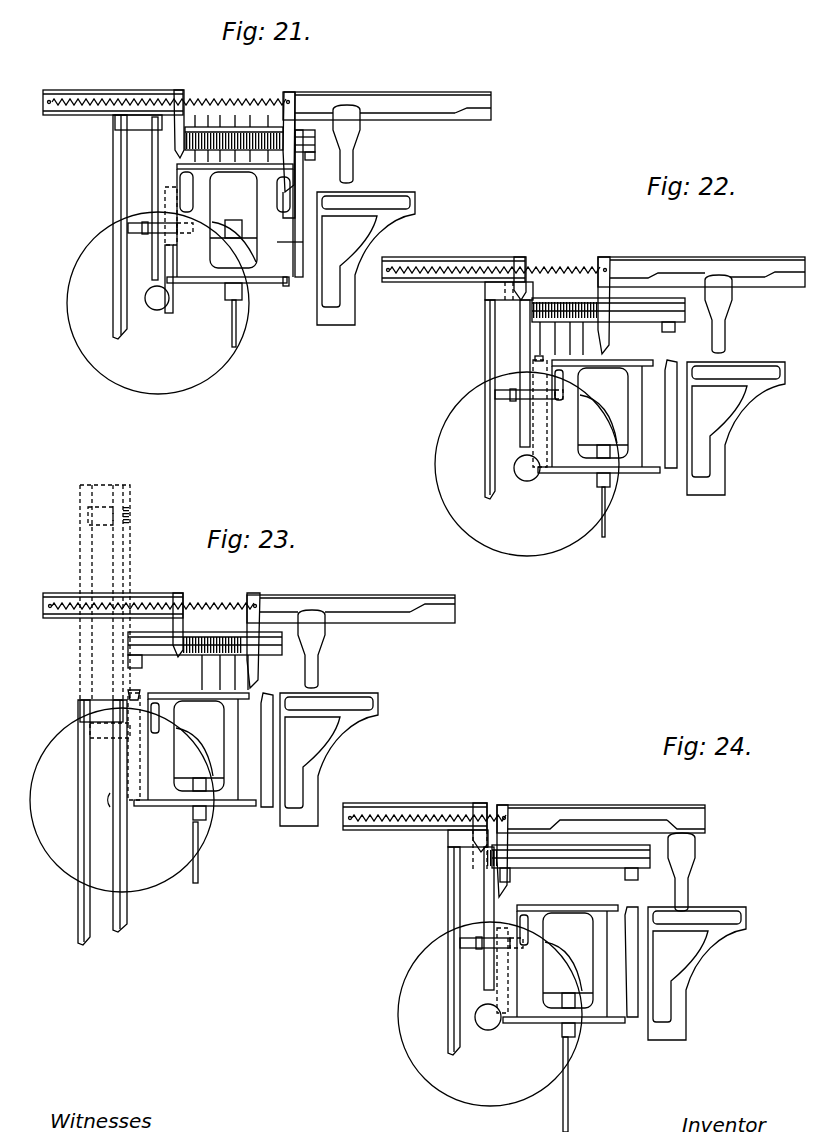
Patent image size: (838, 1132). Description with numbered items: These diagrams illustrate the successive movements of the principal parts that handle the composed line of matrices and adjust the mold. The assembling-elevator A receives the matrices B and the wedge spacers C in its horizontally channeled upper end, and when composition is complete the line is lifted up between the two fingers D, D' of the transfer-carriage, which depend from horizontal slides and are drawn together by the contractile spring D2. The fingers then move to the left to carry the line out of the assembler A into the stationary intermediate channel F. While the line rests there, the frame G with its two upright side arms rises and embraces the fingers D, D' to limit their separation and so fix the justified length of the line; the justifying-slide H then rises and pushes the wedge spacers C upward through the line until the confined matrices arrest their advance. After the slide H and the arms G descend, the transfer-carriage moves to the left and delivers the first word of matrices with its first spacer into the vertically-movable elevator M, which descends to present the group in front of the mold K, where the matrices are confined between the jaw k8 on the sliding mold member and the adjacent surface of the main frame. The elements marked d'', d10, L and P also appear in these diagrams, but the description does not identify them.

In FIG. 21, the contractile spring D2 is at (127, 100).
In FIG. 22, the contractile spring D2 is at (481, 268).
In FIG. 23, the contractile spring D2 is at (218, 603).
In FIG. 24, the contractile spring D2 is at (427, 815).
In FIG. 21, the finger D is at (169, 111).
In FIG. 22, the finger D is at (522, 267).
In FIG. 23, the finger D is at (186, 625).
In FIG. 24, the finger D is at (477, 814).
In FIG. 21, the finger D' is at (399, 141).
In FIG. 22, the finger D' is at (701, 296).
In FIG. 23, the finger D' is at (351, 640).
In FIG. 24, the finger D' is at (611, 839).
In FIG. 21, the shoulder of slide bar d'' is at (375, 87).
In FIG. 22, the shoulder of slide bar d'' is at (687, 255).
In FIG. 23, the shoulder of slide bar d'' is at (335, 592).
In FIG. 24, the shoulder of slide bar d'' is at (587, 800).
In FIG. 21, the notch of slide bar d10 is at (463, 107).
In FIG. 22, the notch of slide bar d10 is at (768, 273).
In FIG. 23, the notch of slide bar d10 is at (423, 607).
In FIG. 24, the notch of slide bar d10 is at (668, 821).
In FIG. 21, the wedge spacers C is at (268, 158).
In FIG. 22, the wedge spacers C is at (565, 332).
In FIG. 23, the wedge spacers C is at (208, 668).
In FIG. 21, the matrices B is at (249, 160).
In FIG. 22, the matrices B is at (542, 300).
In FIG. 23, the matrices B is at (187, 657).
In FIG. 21, the vertically-movable slide or elevator M is at (133, 125).
In FIG. 22, the vertically-movable slide or elevator M is at (493, 292).
In FIG. 23, the vertically-movable slide or elevator M is at (100, 708).
In FIG. 24, the vertically-movable slide or elevator M is at (458, 838).
In FIG. 21, the frame with upright side arms G is at (168, 175).
In FIG. 22, the frame with upright side arms G is at (543, 410).
In FIG. 23, the frame with upright side arms G is at (200, 748).
In FIG. 24, the frame with upright side arms G is at (561, 932).
In FIG. 21, the mold K is at (140, 223).
In FIG. 22, the mold K is at (502, 390).
In FIG. 24, the mold K is at (467, 940).
In FIG. 21, the front projecting jaw or abutment k8 is at (145, 236).
In FIG. 22, the front projecting jaw or abutment k8 is at (514, 389).
In FIG. 24, the front projecting jaw or abutment k8 is at (478, 937).
In FIG. 21, the wheel L is at (158, 303).
In FIG. 22, the wheel L is at (527, 464).
In FIG. 23, the wheel L is at (122, 800).
In FIG. 24, the wheel L is at (490, 1014).
In FIG. 21, the justifying-slide H is at (227, 173).
In FIG. 22, the justifying-slide H is at (637, 400).
In FIG. 23, the justifying-slide H is at (200, 724).
In FIG. 24, the justifying-slide H is at (598, 909).
In FIG. 21, the handle P is at (350, 153).
In FIG. 22, the handle P is at (731, 331).
In FIG. 23, the handle P is at (320, 656).
In FIG. 24, the handle P is at (692, 870).
In FIG. 21, the stationary channel or support F is at (313, 150).
In FIG. 22, the stationary channel or support F is at (645, 318).
In FIG. 23, the stationary channel or support F is at (143, 645).
In FIG. 24, the stationary channel or support F is at (562, 858).
In FIG. 21, the assembling-elevator A is at (413, 192).
In FIG. 22, the assembling-elevator A is at (720, 404).
In FIG. 23, the assembling-elevator A is at (365, 692).
In FIG. 24, the assembling-elevator A is at (722, 986).